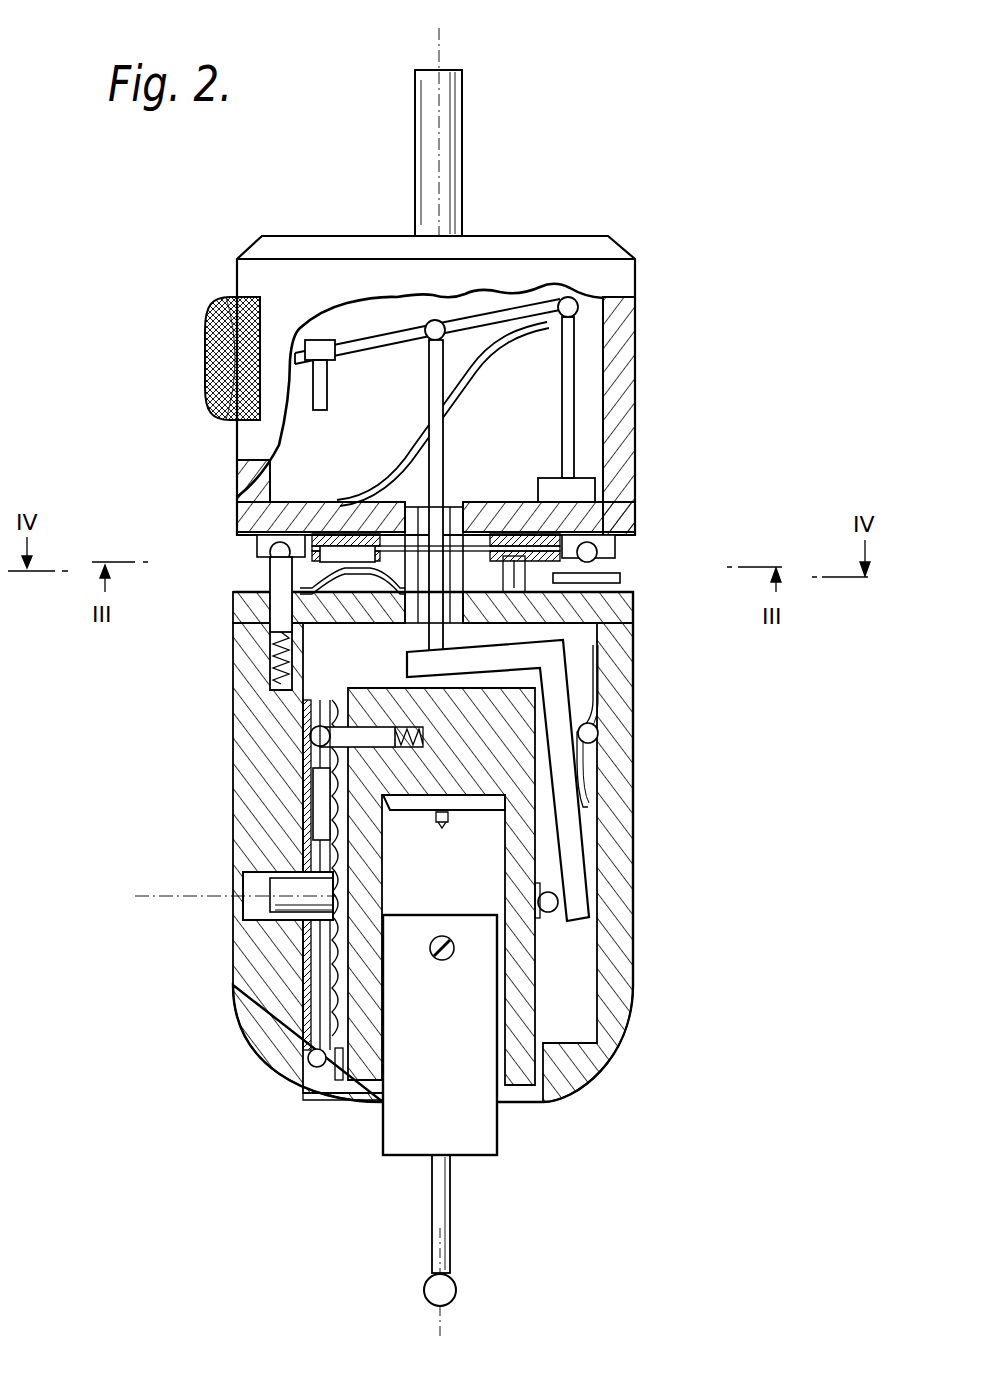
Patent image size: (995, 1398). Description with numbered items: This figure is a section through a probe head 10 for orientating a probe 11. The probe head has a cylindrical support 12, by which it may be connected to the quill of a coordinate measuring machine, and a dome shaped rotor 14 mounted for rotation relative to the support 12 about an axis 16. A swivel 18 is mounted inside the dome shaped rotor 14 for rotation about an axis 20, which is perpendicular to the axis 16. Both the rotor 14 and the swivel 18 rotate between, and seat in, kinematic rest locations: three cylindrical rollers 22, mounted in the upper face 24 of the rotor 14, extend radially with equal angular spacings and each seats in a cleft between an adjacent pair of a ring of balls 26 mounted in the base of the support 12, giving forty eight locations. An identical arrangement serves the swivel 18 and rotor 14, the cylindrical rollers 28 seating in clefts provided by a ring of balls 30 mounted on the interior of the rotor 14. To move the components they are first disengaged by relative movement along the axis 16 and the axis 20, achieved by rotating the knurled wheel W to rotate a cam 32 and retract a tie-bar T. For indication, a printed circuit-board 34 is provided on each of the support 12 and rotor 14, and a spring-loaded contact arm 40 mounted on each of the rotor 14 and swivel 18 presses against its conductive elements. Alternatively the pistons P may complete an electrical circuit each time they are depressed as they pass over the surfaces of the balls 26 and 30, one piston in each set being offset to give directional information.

The probe head 10 is at (693, 726).
The probe 11 is at (405, 1143).
The cylindrical support 12 is at (620, 318).
The dome shaped rotor 14 is at (617, 613).
The axis 16 is at (439, 40).
The swivel 18 is at (528, 998).
The axis 20 is at (175, 898).
The cylindrical rollers 22 is at (623, 585).
The upper face 24 is at (248, 592).
The ring of balls 26 is at (598, 558).
The cylindrical rollers 28 is at (332, 1075).
The ring of balls 30 is at (312, 1062).
The cam 32 is at (323, 385).
The printed circuit-board 34 is at (515, 534).
The spring-loaded contact arm 40 is at (338, 546).
The pistons P is at (276, 605).
The tie-bar T is at (432, 390).
The knurled wheel W is at (213, 332).